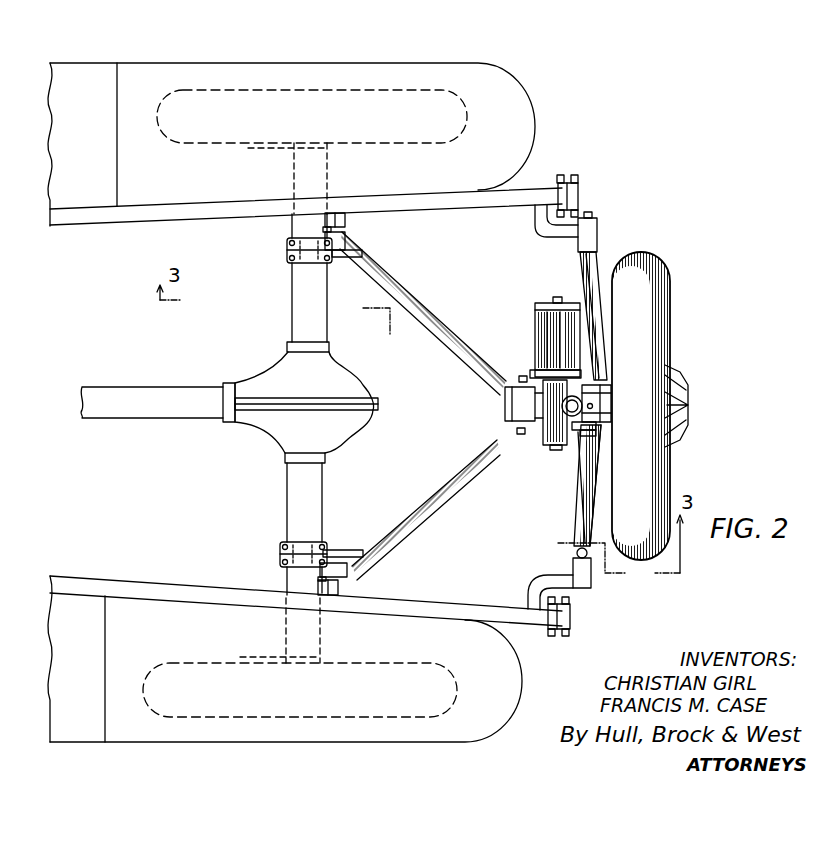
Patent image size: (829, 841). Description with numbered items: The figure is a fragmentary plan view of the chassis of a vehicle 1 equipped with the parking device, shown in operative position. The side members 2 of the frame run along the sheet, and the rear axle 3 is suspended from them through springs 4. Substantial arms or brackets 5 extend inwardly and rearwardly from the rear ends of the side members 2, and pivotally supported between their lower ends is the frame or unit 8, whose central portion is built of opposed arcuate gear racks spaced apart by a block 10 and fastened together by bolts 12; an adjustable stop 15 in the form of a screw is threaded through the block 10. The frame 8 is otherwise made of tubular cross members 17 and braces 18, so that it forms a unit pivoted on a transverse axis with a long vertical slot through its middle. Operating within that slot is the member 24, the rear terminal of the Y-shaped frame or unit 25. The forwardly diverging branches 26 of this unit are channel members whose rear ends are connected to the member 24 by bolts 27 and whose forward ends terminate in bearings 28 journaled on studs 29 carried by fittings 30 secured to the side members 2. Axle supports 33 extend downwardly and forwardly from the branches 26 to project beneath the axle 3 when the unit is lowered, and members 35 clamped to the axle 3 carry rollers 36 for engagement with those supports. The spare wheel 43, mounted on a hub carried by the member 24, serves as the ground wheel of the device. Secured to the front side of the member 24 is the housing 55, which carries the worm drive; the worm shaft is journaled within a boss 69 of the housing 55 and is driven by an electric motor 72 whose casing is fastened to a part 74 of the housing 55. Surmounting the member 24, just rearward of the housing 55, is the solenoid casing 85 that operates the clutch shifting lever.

The vehicle 1 is at (152, 60).
The side members of the frame or chassis 2 is at (449, 200).
The rear axle 3 is at (298, 325).
The springs 4 is at (580, 195).
The arms or brackets 5 is at (553, 225).
The frame or unit 8 is at (605, 283).
The block 10 is at (593, 409).
The bolts 12 is at (588, 442).
The adjustable stop 15 is at (597, 401).
The tubular cross members 17 is at (578, 498).
The braces 18 is at (598, 500).
The member 24 is at (513, 403).
The Y-shaped frame or unit 25 is at (455, 319).
The forwardly diverging branches 26 is at (412, 290).
The bolts 27 is at (517, 375).
The bearings 28 is at (323, 228).
The studs 29 is at (357, 238).
The fittings 30 is at (345, 220).
The axle supports 33 is at (338, 257).
The members 35 is at (292, 263).
The rollers 36 is at (287, 250).
The spare wheel 43 is at (662, 317).
The housing 55 is at (547, 436).
The boss 69 is at (552, 450).
The electric motor 72 is at (538, 327).
The part of the housing 74 is at (552, 370).
The solenoid casing 85 is at (503, 417).